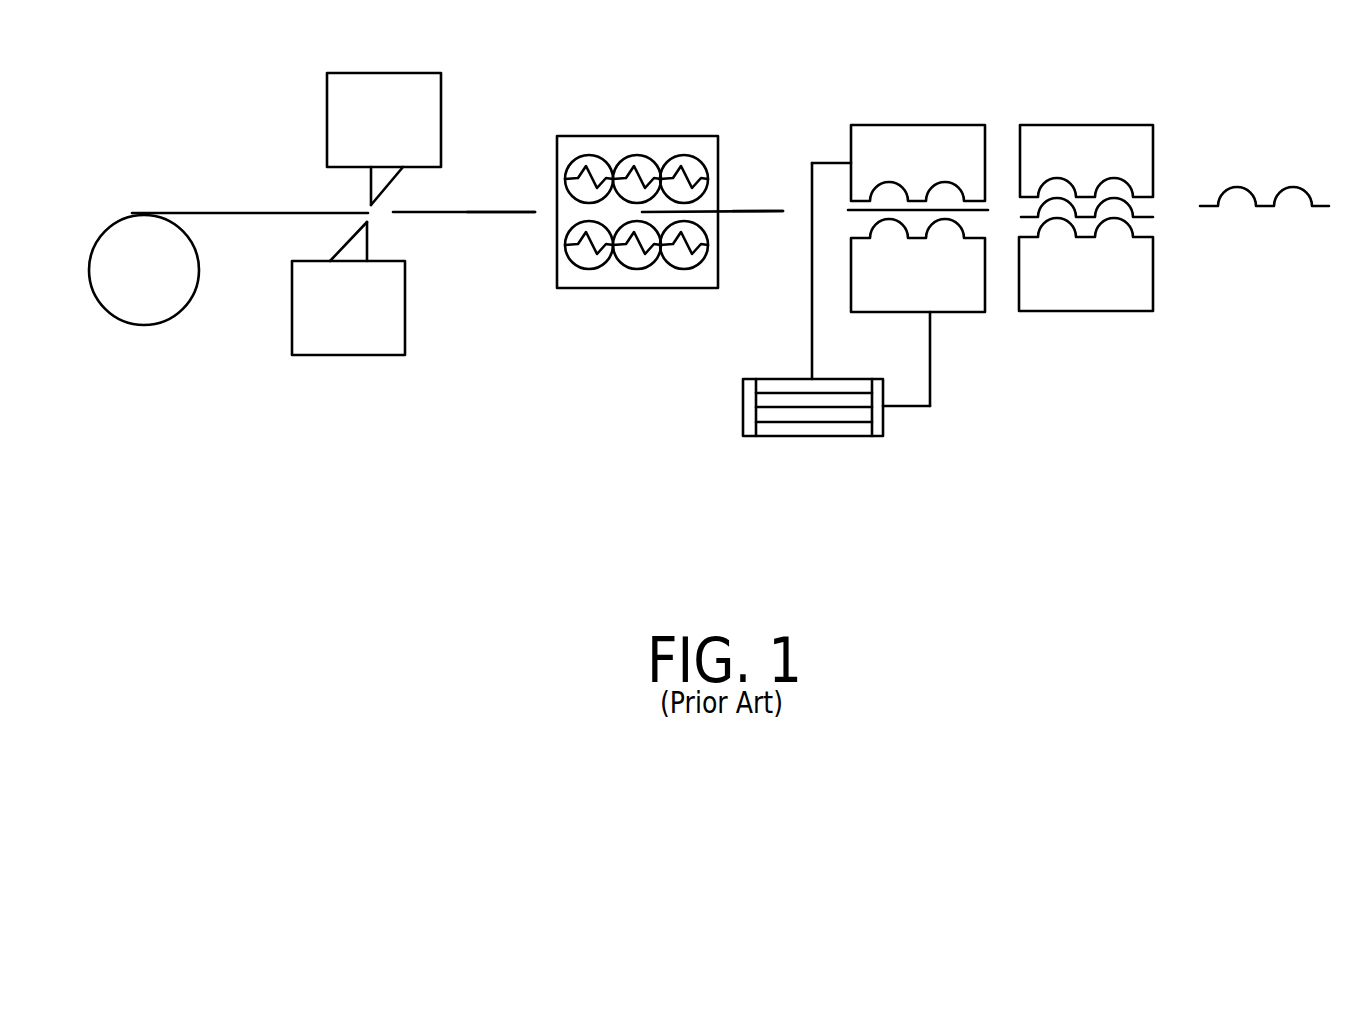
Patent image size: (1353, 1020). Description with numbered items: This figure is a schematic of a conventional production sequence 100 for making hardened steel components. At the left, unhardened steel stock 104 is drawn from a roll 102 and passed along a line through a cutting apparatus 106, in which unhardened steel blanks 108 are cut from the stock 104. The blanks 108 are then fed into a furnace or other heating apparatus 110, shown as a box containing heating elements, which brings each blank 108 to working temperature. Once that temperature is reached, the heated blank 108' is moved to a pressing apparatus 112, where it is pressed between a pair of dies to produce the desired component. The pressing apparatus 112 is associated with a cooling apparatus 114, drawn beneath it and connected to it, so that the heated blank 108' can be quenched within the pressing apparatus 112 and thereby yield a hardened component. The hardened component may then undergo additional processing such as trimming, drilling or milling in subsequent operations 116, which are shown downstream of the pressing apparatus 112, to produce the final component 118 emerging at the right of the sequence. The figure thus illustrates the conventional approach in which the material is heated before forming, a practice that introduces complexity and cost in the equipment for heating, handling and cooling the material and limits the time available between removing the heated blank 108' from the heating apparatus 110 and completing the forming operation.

The production sequence 100 is at (177, 49).
The roll 102 is at (150, 323).
The unhardened steel stock 104 is at (257, 213).
The cutting apparatus 106 is at (353, 345).
The unhardened steel blank 108 is at (544, 137).
The heating apparatus 110 is at (577, 277).
The heated blank 108' is at (816, 139).
The pressing apparatus 112 is at (953, 293).
The cooling apparatus 114 is at (785, 436).
The subsequent operations 116 is at (1103, 302).
The final component 118 is at (1277, 188).